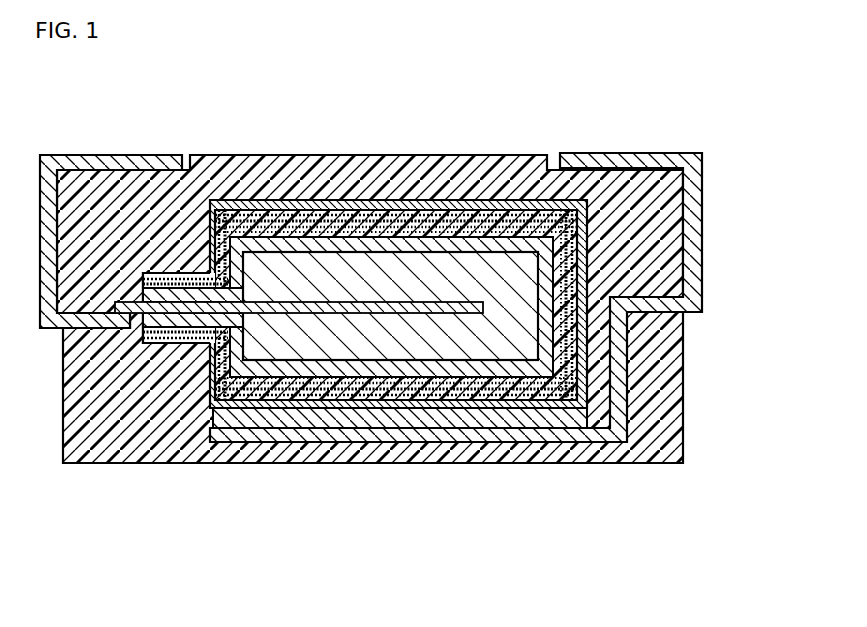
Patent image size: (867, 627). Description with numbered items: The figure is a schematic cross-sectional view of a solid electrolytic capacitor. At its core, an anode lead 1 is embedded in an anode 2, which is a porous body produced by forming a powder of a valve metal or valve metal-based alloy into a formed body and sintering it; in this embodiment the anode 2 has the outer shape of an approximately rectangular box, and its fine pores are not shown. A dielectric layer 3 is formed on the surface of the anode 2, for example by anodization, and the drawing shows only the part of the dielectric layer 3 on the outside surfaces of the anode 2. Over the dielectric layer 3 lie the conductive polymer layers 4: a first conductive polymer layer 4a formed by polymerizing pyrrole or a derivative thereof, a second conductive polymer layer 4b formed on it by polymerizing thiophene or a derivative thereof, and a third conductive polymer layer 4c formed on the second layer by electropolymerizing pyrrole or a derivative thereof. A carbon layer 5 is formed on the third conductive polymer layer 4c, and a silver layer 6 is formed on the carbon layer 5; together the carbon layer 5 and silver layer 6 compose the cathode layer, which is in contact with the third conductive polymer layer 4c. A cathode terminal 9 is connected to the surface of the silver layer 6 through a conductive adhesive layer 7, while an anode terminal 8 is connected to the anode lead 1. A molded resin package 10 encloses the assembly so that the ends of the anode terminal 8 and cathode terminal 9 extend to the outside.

The anode lead 1 is at (331, 316).
The anode 2 is at (415, 350).
The dielectric layer 3 is at (253, 223).
The conductive polymer layers 4 is at (360, 240).
The first conductive polymer layer 4a is at (410, 107).
The second conductive polymer layer 4b is at (340, 227).
The third conductive polymer layer 4c is at (378, 217).
The carbon layer 5 is at (478, 195).
The silver layer 6 is at (520, 200).
The conductive adhesive layer 7 is at (503, 422).
The anode terminal 8 is at (92, 325).
The cathode terminal 9 is at (580, 433).
The molded resin package 10 is at (163, 434).